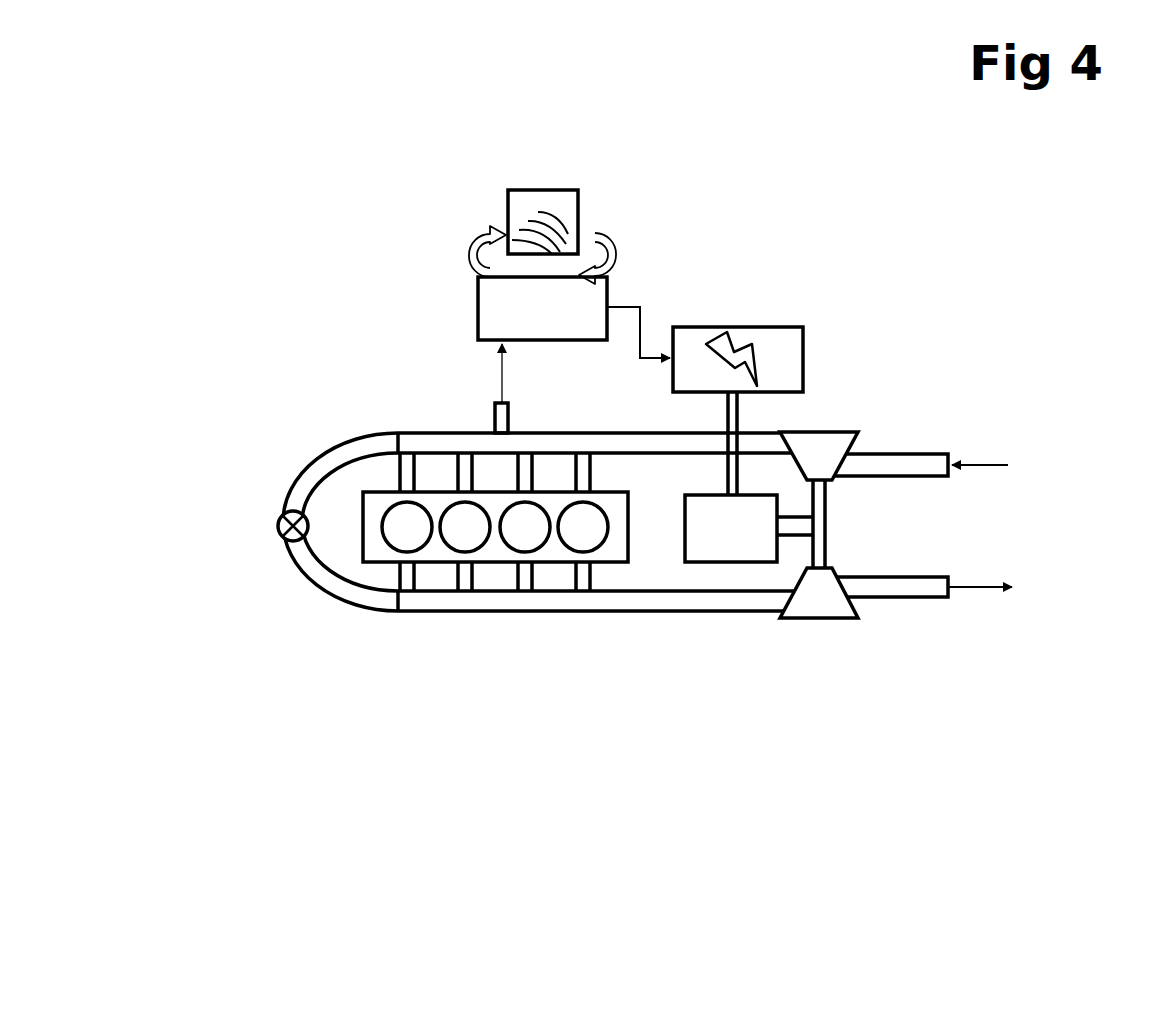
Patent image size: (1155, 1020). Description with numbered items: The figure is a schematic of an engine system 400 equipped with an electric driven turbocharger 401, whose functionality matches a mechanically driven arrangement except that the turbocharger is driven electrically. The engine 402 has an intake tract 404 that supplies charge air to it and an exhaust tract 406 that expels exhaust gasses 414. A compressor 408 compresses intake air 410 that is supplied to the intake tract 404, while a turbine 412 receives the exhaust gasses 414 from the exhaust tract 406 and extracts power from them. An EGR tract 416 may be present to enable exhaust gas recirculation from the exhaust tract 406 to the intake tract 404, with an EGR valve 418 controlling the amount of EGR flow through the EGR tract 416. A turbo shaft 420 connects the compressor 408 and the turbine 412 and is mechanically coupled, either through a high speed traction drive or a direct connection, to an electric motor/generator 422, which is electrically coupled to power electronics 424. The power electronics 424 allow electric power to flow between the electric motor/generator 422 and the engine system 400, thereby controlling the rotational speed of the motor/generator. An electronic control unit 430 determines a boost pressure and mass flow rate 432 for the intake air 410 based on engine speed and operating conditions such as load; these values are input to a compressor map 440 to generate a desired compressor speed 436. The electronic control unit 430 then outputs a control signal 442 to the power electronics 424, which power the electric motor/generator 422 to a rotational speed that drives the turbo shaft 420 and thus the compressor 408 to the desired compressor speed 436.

The engine system 400 is at (258, 128).
The electric driven turbocharger 401 is at (845, 522).
The engine 402 is at (407, 522).
The intake tract 404 is at (422, 445).
The exhaust tract 406 is at (422, 600).
The compressor 408 is at (812, 443).
The intake air 410 is at (988, 463).
The turbine 412 is at (818, 600).
The exhaust gasses 414 is at (977, 590).
The EGR tract 416 is at (330, 593).
The EGR valve 418 is at (277, 527).
The turbo shaft 420 is at (818, 552).
The electric motor/generator 422 is at (712, 542).
The power electronics 424 is at (753, 338).
The electronic control unit 430 is at (597, 288).
The boost pressure and mass flow rate 432 is at (498, 230).
The desired compressor speed 436 is at (597, 230).
The compressor map 440 is at (548, 200).
The control signal 442 is at (661, 354).